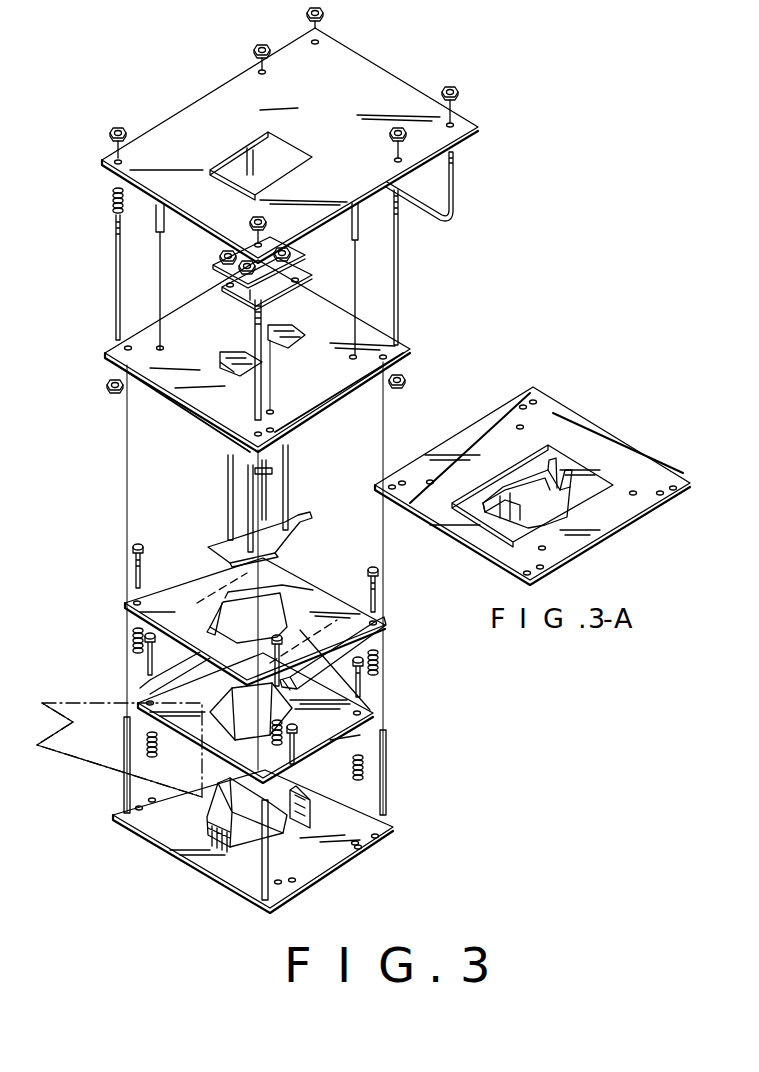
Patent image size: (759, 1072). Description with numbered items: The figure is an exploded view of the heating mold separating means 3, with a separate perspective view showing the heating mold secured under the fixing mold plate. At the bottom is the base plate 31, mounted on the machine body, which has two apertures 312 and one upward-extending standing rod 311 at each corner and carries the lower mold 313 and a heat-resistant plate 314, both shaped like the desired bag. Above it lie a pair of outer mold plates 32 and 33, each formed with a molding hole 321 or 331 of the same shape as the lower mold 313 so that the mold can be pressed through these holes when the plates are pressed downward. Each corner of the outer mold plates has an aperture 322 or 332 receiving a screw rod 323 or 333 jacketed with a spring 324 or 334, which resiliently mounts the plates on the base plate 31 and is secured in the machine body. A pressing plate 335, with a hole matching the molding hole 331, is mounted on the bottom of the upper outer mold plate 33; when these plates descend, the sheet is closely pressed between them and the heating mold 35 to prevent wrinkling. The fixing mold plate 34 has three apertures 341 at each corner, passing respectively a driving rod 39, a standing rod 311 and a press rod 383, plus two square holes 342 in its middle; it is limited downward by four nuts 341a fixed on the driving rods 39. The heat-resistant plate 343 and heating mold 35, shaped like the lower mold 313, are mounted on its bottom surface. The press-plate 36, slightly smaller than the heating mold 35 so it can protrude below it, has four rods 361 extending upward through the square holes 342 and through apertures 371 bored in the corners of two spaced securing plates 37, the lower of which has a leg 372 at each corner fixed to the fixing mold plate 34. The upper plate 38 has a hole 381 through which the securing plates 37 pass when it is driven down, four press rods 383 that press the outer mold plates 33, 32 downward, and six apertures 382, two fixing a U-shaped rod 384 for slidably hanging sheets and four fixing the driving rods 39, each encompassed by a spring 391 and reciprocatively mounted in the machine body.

In FIG. 3, the heating mold separating means 3 is at (97, 454).
In FIG. 3, the base plate 31 is at (226, 890).
In FIG. 3, the standing rod 311 is at (122, 792).
In FIG. 3, the aperture 312 is at (375, 840).
In FIG. 3, the lower mold 313 is at (225, 870).
In FIG. 3, the heat-resistant plate 314 is at (232, 835).
In FIG. 3, the outer mold plate 32 is at (373, 712).
In FIG. 3, the molding hole 321 is at (230, 706).
In FIG. 3, the aperture 322 is at (386, 744).
In FIG. 3, the screw rod 323 is at (366, 690).
In FIG. 3, the spring 324 is at (366, 770).
In FIG. 3, the outer mold plate 33 is at (330, 603).
In FIG. 3, the molding hole 331 is at (292, 590).
In FIG. 3, the aperture 332 is at (384, 624).
In FIG. 3, the screw rod 333 is at (130, 562).
In FIG. 3, the spring 334 is at (376, 668).
In FIG. 3, the pressing plate 335 is at (134, 688).
In FIG. 3, the fixing mold plate 34 is at (366, 330).
In FIG. 3-A, the fixing mold plate 34 is at (497, 405).
In FIG. 3, the aperture 341 is at (383, 360).
In FIG. 3, the nut 341a is at (408, 380).
In FIG. 3, the square hole 342 is at (235, 365).
In FIG. 3, the heat-resistant plate 343 is at (197, 420).
In FIG. 3-A, the heat-resistant plate 343 is at (592, 425).
In FIG. 3-A, the heating mold 35 is at (520, 478).
In FIG. 3, the press-plate 36 is at (300, 505).
In FIG. 3, the rod 361 is at (288, 482).
In FIG. 3, the securing plate 37 is at (288, 252).
In FIG. 3, the aperture 371 is at (291, 292).
In FIG. 3, the leg 372 is at (214, 296).
In FIG. 3, the upper plate 38 is at (388, 82).
In FIG. 3, the hole 381 is at (250, 158).
In FIG. 3, the aperture 382 is at (252, 66).
In FIG. 3, the press rod 383 is at (166, 237).
In FIG. 3, the U-shaped rod 384 is at (455, 212).
In FIG. 3, the driving rod 39 is at (116, 288).
In FIG. 3, the spring 391 is at (110, 202).